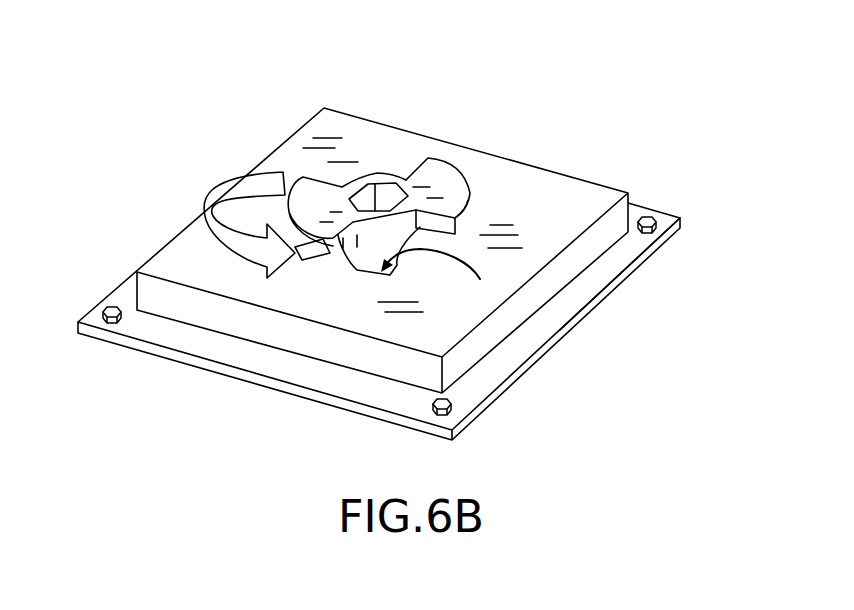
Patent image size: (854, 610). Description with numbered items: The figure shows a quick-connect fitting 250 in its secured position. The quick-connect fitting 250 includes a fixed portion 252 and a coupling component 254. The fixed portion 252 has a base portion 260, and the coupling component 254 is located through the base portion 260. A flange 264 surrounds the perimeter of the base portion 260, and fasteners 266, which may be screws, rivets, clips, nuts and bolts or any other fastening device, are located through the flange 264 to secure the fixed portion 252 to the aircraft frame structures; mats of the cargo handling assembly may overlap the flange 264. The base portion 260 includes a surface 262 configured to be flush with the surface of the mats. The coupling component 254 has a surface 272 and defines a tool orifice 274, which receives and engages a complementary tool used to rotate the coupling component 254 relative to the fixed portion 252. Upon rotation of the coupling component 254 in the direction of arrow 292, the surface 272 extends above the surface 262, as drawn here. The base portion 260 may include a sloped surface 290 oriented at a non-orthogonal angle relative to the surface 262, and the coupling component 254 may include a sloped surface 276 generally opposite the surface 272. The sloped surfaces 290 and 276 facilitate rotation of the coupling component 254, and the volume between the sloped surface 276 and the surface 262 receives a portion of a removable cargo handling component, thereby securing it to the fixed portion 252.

The quick-connect fitting 250 is at (131, 129).
The fixed portion 252 is at (596, 187).
The coupling component 254 is at (433, 173).
The base portion 260 is at (489, 173).
The surface 262 is at (552, 211).
The flange 264 is at (611, 270).
The fasteners 266 is at (453, 410).
The surface 272 is at (333, 211).
The tool orifice 274 is at (387, 172).
The sloped surface 276 is at (320, 242).
The sloped surface 290 is at (440, 279).
The arrow 292 is at (244, 176).